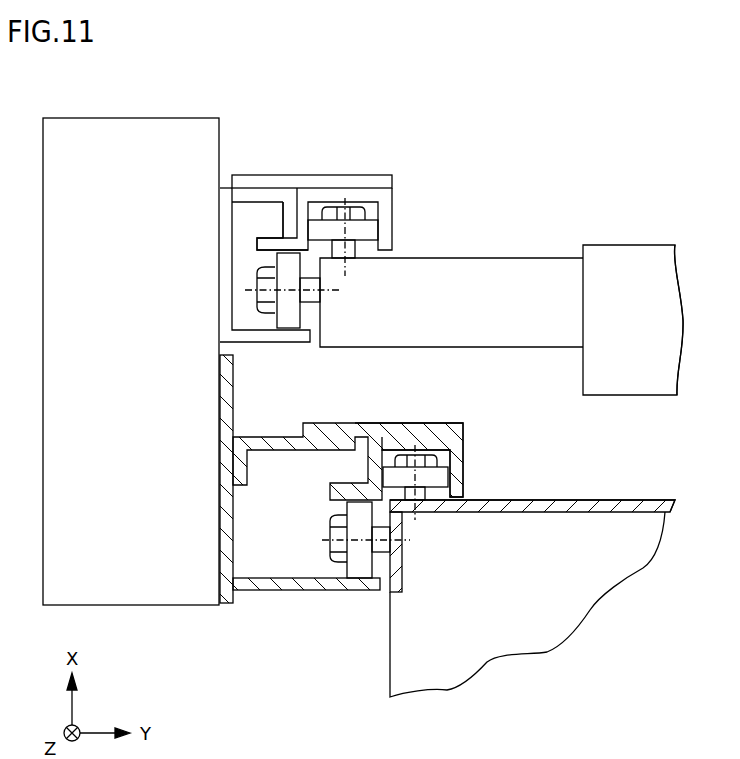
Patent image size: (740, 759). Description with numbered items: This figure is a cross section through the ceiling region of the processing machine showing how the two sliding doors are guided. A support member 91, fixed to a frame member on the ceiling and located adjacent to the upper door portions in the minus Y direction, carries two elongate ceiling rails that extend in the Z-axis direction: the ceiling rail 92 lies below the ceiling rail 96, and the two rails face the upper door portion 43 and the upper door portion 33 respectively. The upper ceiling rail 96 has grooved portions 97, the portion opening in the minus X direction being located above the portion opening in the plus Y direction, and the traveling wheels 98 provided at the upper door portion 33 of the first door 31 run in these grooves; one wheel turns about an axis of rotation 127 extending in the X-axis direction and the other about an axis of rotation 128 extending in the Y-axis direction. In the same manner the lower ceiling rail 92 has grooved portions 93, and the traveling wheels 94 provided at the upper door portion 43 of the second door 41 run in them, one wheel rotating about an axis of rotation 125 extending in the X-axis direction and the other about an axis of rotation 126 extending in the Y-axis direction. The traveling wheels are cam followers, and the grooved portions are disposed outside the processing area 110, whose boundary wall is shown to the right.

The support member 91 is at (137, 138).
The ceiling rail 96 is at (290, 176).
The axis of rotation 128 is at (250, 292).
The grooved portion 97 is at (378, 212).
The traveling wheel 98 is at (370, 228).
The axis of rotation 127 is at (345, 272).
The upper door portion 33 is at (614, 262).
The first door 31 is at (652, 246).
The ceiling rail 92 is at (274, 438).
The axis of rotation 125 is at (392, 432).
The axis of rotation 126 is at (273, 590).
The grooved portion 93 is at (437, 458).
The traveling wheel 94 is at (437, 478).
The upper door portion 43 is at (601, 500).
The second door 41 is at (656, 498).
The processing area 110 is at (550, 683).